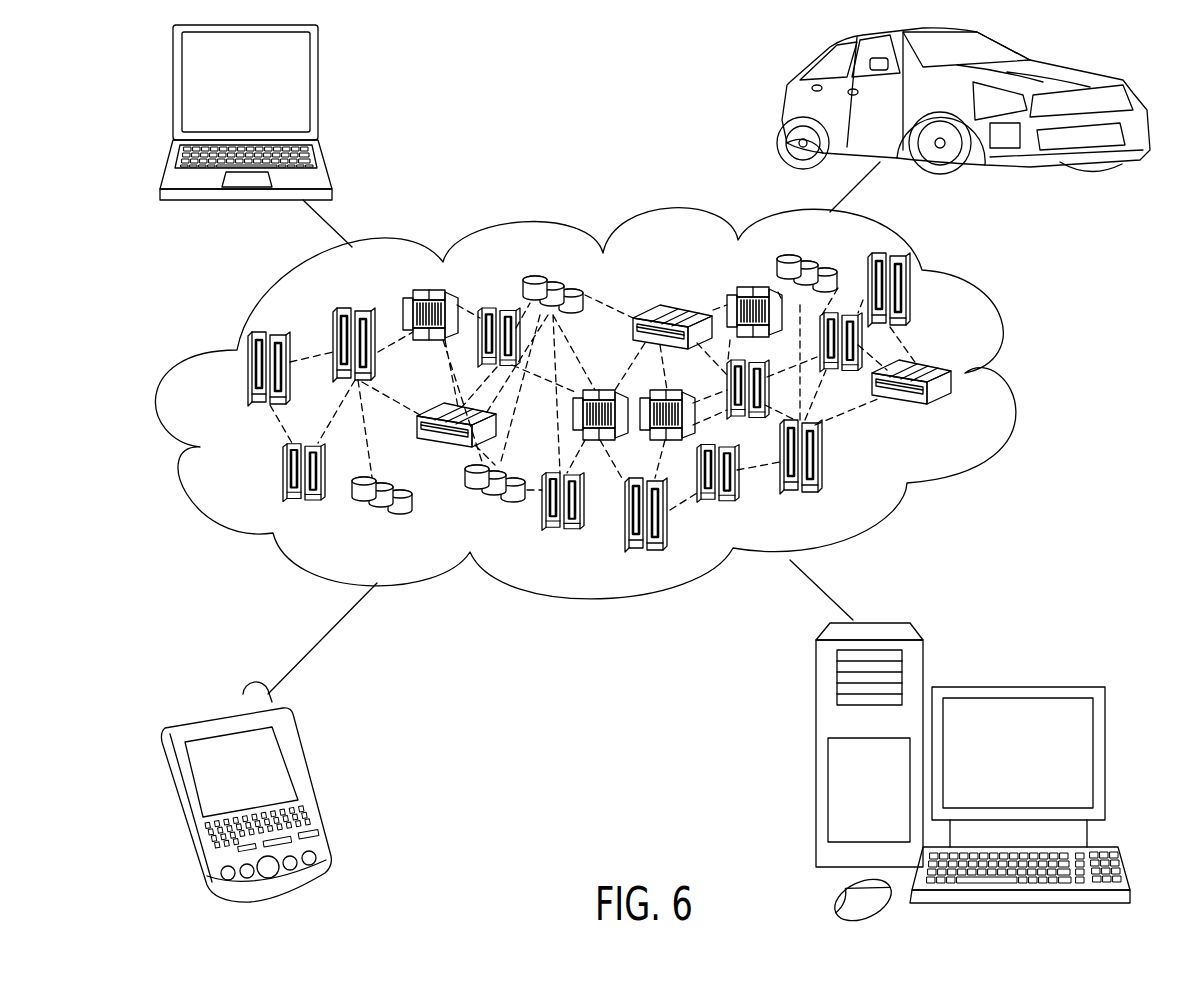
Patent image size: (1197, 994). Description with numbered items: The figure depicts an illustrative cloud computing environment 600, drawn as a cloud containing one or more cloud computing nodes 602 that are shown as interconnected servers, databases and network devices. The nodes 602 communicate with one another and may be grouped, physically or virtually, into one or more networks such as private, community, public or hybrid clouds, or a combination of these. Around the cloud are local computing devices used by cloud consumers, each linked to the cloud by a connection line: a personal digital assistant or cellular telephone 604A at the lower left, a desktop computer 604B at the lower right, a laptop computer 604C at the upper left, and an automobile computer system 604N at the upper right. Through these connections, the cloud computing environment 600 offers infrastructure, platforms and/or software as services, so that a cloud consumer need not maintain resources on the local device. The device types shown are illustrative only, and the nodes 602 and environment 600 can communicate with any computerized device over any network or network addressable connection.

The cloud computing environment 600 is at (1013, 380).
The cloud computing nodes 602 is at (960, 415).
The personal digital assistant (PDA) or cellular telephone 604A is at (310, 787).
The desktop computer 604B is at (1015, 687).
The laptop computer 604C is at (318, 90).
The automobile computer system 604N is at (780, 107).